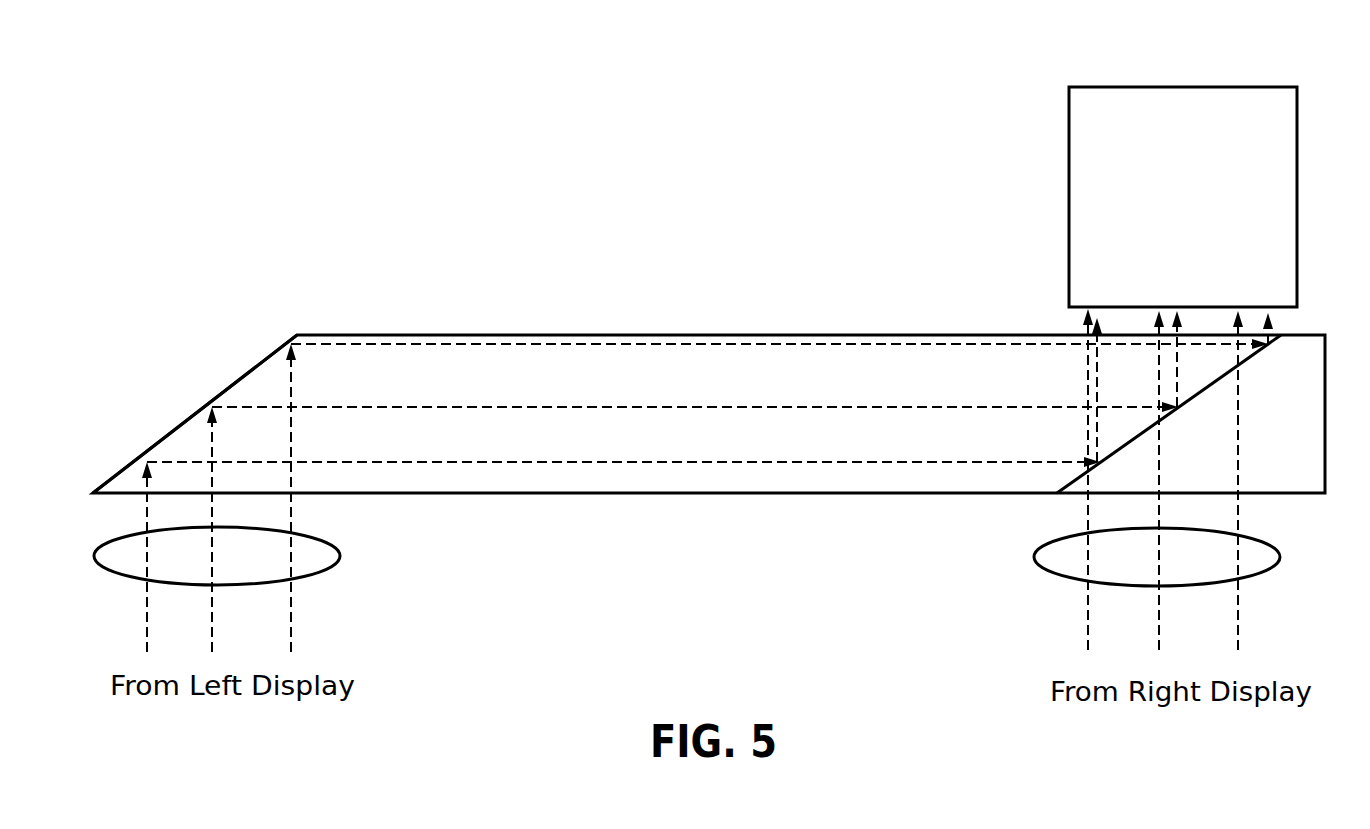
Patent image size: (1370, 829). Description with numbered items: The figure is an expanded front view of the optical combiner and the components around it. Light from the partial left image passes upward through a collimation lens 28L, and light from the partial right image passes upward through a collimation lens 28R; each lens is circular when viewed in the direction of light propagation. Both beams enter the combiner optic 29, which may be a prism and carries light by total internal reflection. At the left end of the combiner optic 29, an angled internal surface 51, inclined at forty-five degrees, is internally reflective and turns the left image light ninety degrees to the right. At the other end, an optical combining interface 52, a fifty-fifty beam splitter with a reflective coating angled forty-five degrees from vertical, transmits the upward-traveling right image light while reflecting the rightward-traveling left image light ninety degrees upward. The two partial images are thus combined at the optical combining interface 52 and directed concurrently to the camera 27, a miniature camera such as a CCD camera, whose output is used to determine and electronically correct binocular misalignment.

The camera 27 is at (1273, 89).
The collimation lens 28L is at (322, 572).
The collimation lens 28R is at (1276, 567).
The combiner optic 29 is at (707, 335).
The angled internal surface 51 is at (262, 362).
The optical combining interface 52 is at (1203, 390).